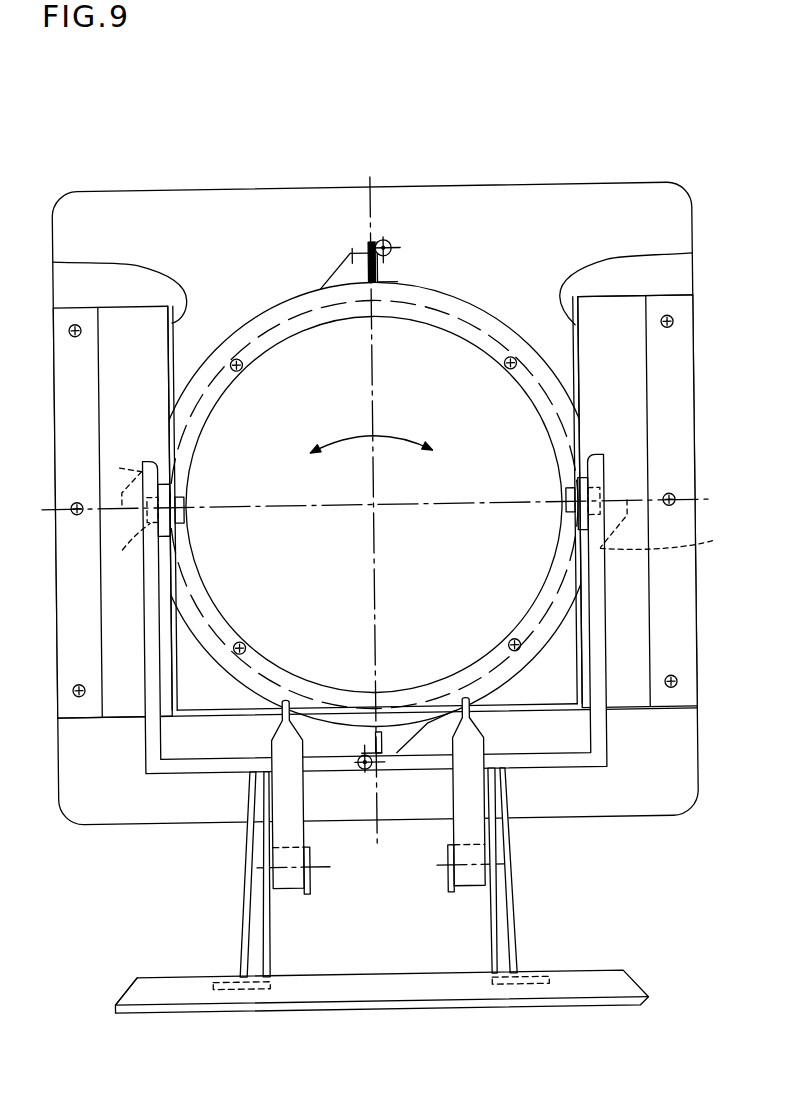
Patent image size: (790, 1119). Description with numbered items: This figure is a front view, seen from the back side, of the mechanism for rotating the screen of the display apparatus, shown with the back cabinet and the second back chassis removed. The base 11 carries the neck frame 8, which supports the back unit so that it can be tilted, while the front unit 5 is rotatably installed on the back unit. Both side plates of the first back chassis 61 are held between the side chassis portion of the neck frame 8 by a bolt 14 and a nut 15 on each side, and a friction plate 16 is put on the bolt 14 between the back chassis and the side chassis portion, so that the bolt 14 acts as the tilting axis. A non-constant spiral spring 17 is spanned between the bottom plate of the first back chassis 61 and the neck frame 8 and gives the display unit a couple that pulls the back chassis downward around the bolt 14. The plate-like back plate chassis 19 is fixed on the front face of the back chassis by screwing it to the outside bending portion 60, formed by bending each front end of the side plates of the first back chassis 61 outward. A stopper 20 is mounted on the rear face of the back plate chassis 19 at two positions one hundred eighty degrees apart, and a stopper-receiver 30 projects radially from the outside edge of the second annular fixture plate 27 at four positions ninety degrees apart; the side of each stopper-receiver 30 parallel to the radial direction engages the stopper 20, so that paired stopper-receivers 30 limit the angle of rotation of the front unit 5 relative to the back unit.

The front unit 5 is at (141, 186).
The neck frame 8 is at (598, 669).
The base 11 is at (582, 978).
The bolt 14 is at (571, 492).
The nut 15 is at (603, 497).
The friction plate 16 is at (152, 455).
The non-constant spiral spring 17 is at (274, 798).
The back plate chassis 19 is at (669, 298).
The stopper 20 is at (393, 238).
The second annular fixture plate 27 is at (425, 288).
The stopper-receiver 30 is at (355, 253).
The outside bending portion 60 is at (632, 359).
The first back chassis 61 is at (56, 257).